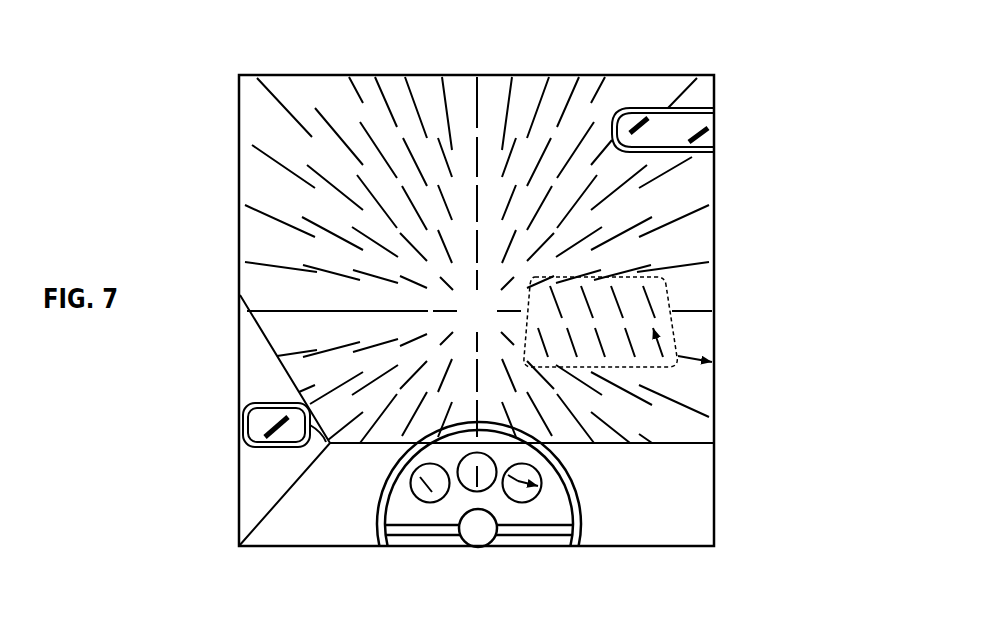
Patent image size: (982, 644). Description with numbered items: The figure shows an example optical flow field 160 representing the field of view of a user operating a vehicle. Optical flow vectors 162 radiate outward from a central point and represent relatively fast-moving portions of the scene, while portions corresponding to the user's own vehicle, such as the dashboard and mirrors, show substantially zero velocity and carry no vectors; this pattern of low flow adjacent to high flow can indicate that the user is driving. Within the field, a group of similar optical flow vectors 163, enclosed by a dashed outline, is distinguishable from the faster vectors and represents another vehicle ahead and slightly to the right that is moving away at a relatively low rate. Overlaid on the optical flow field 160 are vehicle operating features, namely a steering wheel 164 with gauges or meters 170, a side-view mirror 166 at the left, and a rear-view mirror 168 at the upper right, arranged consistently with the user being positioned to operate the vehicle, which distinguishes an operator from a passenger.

The optical flow field 160 is at (716, 290).
The optical flow vectors 162 is at (258, 123).
The group of similar optical flow vectors 163 is at (658, 319).
The steering wheel 164 is at (581, 501).
The side-view mirror 166 is at (247, 404).
The rear-view mirror 168 is at (652, 107).
The gauges or meters 170 is at (508, 505).